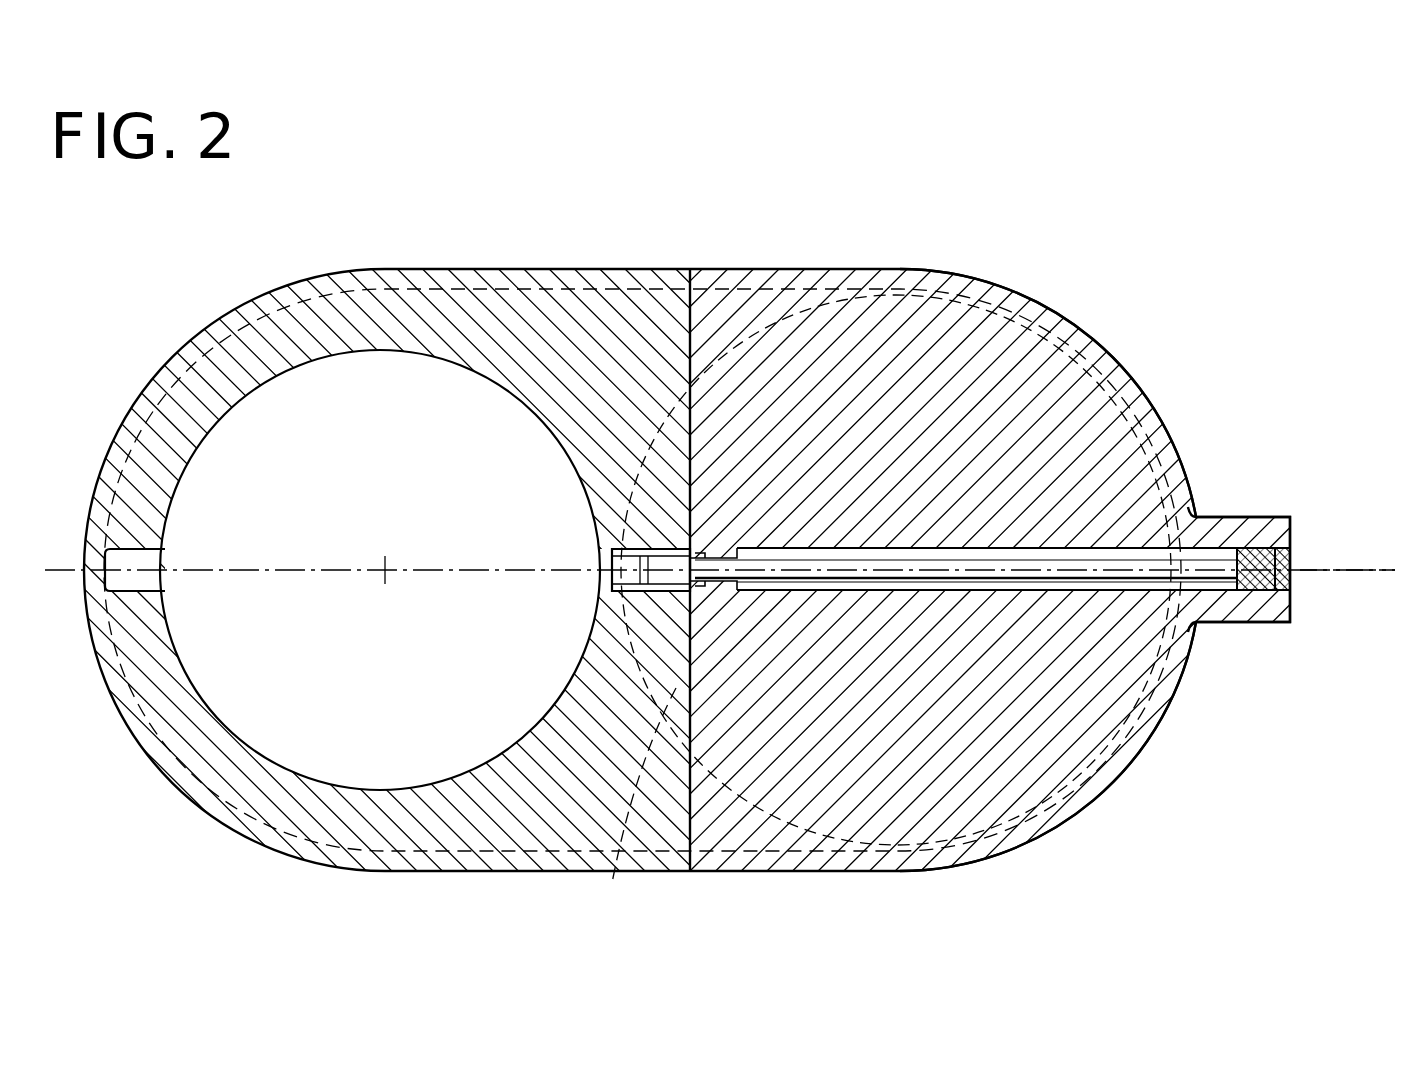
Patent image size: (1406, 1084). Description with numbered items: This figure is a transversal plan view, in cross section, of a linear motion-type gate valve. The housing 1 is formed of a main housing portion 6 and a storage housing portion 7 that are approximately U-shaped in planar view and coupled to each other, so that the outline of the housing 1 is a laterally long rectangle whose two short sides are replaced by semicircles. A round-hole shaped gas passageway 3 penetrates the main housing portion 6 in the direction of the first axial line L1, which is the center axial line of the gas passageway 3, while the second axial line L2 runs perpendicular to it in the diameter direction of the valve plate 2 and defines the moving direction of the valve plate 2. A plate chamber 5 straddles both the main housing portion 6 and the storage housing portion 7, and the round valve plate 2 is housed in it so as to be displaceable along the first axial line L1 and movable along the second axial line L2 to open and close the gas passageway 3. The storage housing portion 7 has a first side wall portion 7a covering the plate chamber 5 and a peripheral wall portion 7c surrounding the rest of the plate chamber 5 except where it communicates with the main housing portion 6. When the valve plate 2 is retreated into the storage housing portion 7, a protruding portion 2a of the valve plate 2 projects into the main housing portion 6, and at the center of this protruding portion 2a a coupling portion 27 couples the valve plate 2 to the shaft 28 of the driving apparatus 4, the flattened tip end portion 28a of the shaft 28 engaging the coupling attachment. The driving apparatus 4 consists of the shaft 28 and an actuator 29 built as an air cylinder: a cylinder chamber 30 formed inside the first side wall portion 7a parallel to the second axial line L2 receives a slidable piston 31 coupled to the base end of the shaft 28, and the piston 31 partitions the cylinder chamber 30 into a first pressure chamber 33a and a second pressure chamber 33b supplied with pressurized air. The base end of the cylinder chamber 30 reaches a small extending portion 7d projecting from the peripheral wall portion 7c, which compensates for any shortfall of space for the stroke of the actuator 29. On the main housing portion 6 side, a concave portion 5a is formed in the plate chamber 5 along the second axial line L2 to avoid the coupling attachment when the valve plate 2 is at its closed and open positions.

The housing 1 is at (615, 236).
The valve plate 2 is at (953, 292).
The protruding portion 2a is at (637, 813).
The gas passageway 3 is at (396, 492).
The driving apparatus 4 is at (1128, 607).
The plate chamber 5 is at (525, 292).
The concave portion 5a is at (118, 578).
The main housing portion 6 is at (170, 328).
The storage housing portion 7 is at (1159, 350).
The first side wall portion 7a is at (1045, 378).
The peripheral wall portion 7c is at (1130, 760).
The extending portion 7d is at (1250, 625).
The coupling portion 27 is at (587, 592).
The shaft 28 is at (1137, 563).
The flattened tip end portion 28a is at (620, 556).
The actuator 29 is at (1315, 599).
The cylinder chamber 30 is at (1209, 552).
The piston 31 is at (1278, 545).
The first pressure chamber 33a is at (1292, 555).
The second pressure chamber 33b is at (1080, 592).
The first axial line L1 is at (720, 548).
The second axial line L2 is at (1347, 574).